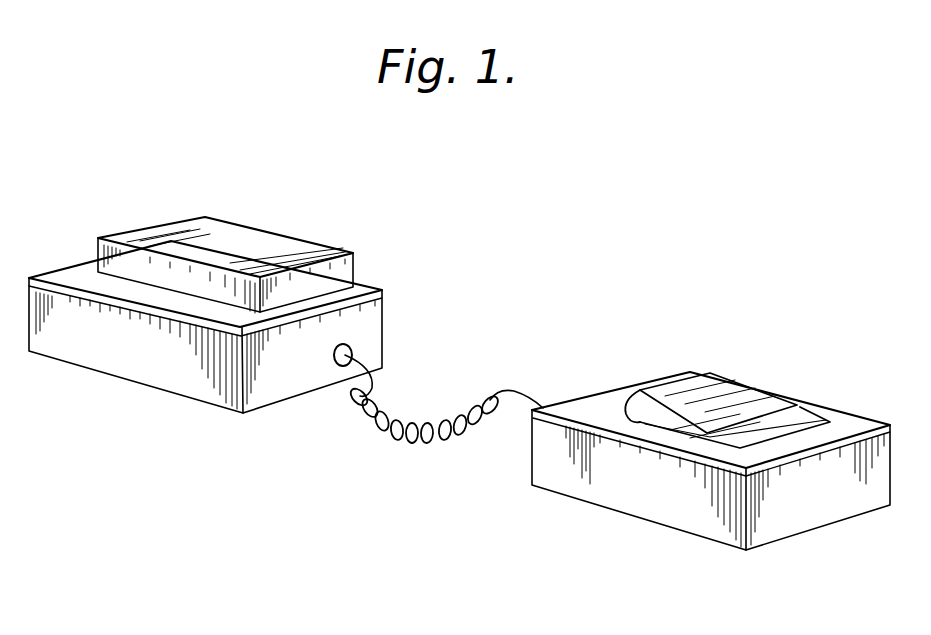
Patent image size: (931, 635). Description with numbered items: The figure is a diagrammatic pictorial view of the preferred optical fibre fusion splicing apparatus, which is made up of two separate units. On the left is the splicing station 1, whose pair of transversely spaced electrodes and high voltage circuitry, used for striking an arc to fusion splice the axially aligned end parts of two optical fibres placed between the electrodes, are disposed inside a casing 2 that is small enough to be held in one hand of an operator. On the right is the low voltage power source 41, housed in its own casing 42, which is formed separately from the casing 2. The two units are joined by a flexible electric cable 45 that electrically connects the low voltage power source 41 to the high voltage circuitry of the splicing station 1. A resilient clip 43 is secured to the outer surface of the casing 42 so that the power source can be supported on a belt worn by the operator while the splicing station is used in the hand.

The splicing station 1 is at (205, 342).
The casing 2 is at (190, 382).
The low voltage power source 41 is at (711, 467).
The casing 42 is at (640, 500).
The resilient clip 43 is at (707, 392).
The flexible electric cable 45 is at (420, 422).